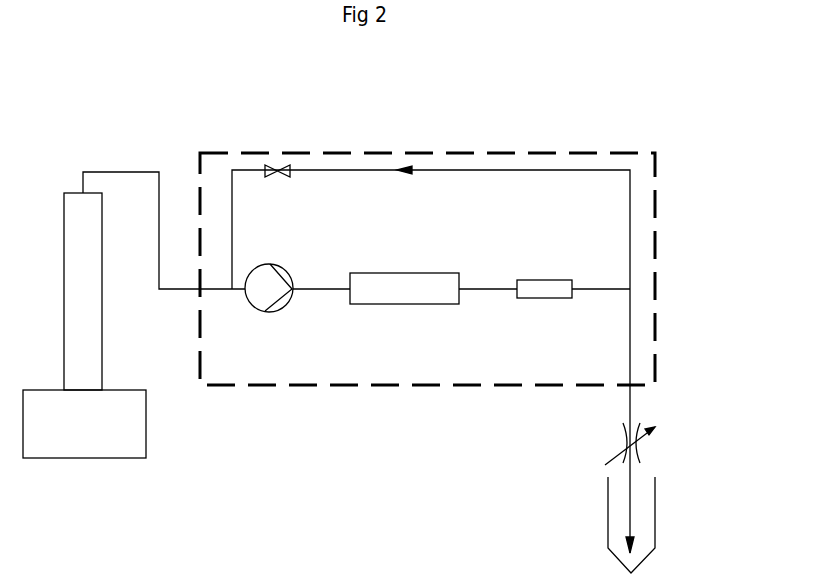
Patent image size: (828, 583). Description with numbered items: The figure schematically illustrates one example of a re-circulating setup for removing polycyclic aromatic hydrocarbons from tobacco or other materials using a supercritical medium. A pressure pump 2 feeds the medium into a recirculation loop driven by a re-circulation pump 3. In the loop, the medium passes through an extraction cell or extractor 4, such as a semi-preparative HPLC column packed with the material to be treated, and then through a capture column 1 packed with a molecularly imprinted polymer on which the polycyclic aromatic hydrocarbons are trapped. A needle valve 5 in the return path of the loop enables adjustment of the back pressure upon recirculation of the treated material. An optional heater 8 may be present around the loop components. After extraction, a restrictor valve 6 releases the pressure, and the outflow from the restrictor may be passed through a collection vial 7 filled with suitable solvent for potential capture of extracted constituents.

The capture column 1 is at (550, 262).
The pressure pump 2 is at (84, 325).
The re-circulation pump 3 is at (269, 316).
The extraction cell (extractor) 4 is at (404, 288).
The needle valve 5 is at (281, 138).
The restrictor valve 6 is at (678, 448).
The collection vial 7 is at (685, 525).
The heater 8 is at (427, 269).